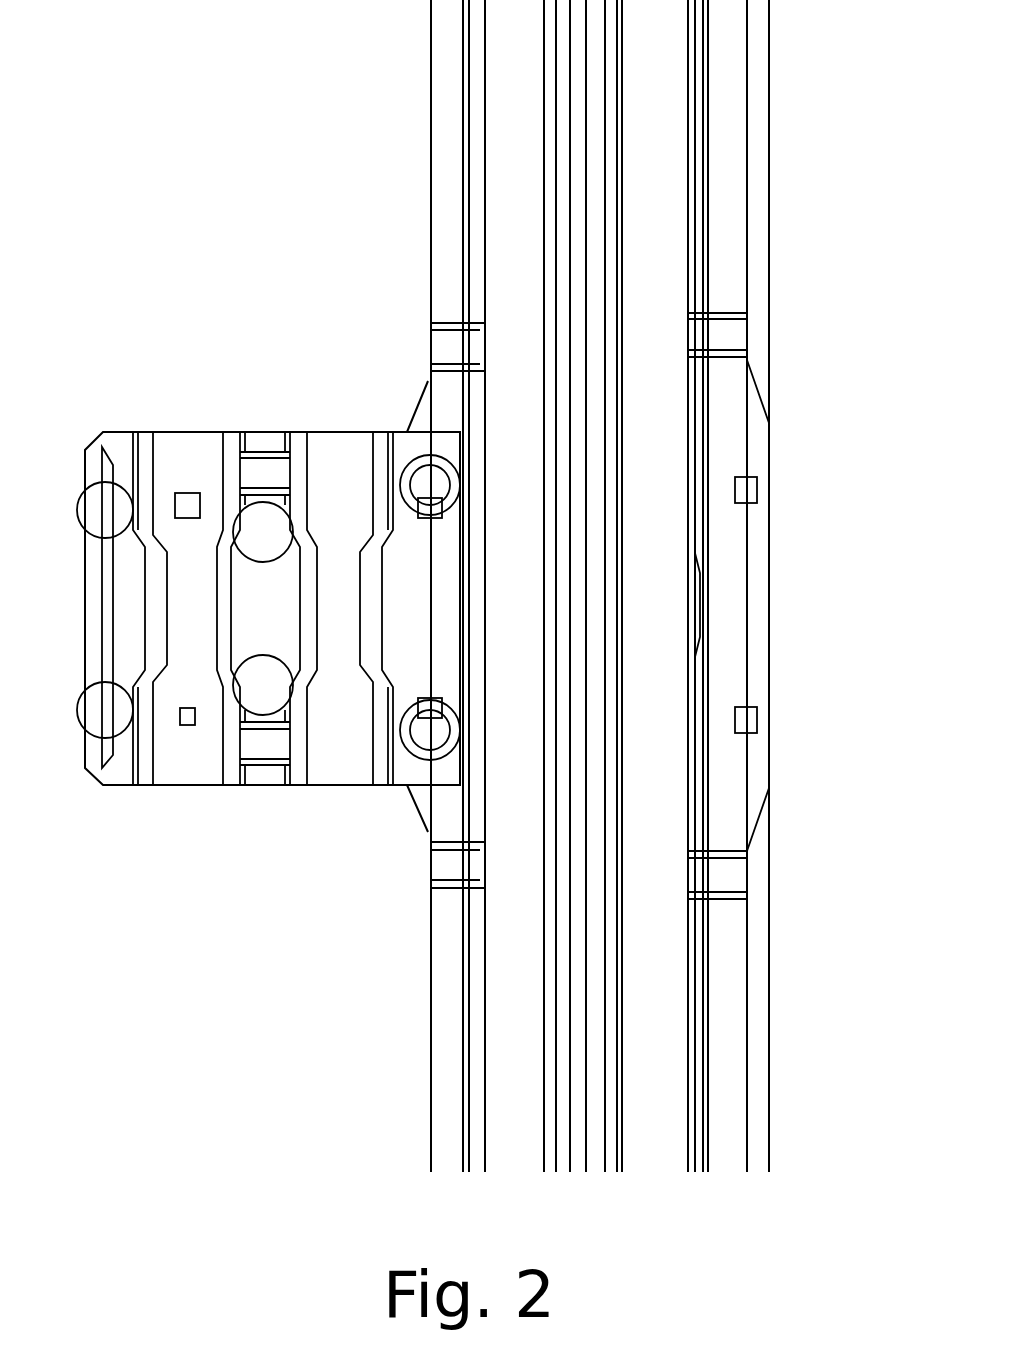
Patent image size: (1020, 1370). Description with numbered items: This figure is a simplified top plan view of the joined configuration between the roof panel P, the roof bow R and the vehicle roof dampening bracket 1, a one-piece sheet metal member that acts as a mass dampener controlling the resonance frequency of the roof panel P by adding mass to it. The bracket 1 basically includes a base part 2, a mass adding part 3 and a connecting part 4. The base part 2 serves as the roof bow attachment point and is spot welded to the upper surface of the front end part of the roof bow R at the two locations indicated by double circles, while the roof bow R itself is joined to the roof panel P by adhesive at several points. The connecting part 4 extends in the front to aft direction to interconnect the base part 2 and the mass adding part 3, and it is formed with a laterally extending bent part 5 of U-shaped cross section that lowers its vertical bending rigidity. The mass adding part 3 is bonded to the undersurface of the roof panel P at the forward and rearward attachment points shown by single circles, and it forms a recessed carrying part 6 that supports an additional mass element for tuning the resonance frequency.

The roof bow R is at (429, 172).
The roof panel P is at (288, 258).
The vehicle roof dampening bracket 1 is at (265, 424).
The base part 2 is at (460, 797).
The mass adding part 3 is at (283, 797).
The connecting part 4 is at (387, 797).
The bent part 5 is at (337, 462).
The carrying part 6 is at (190, 478).